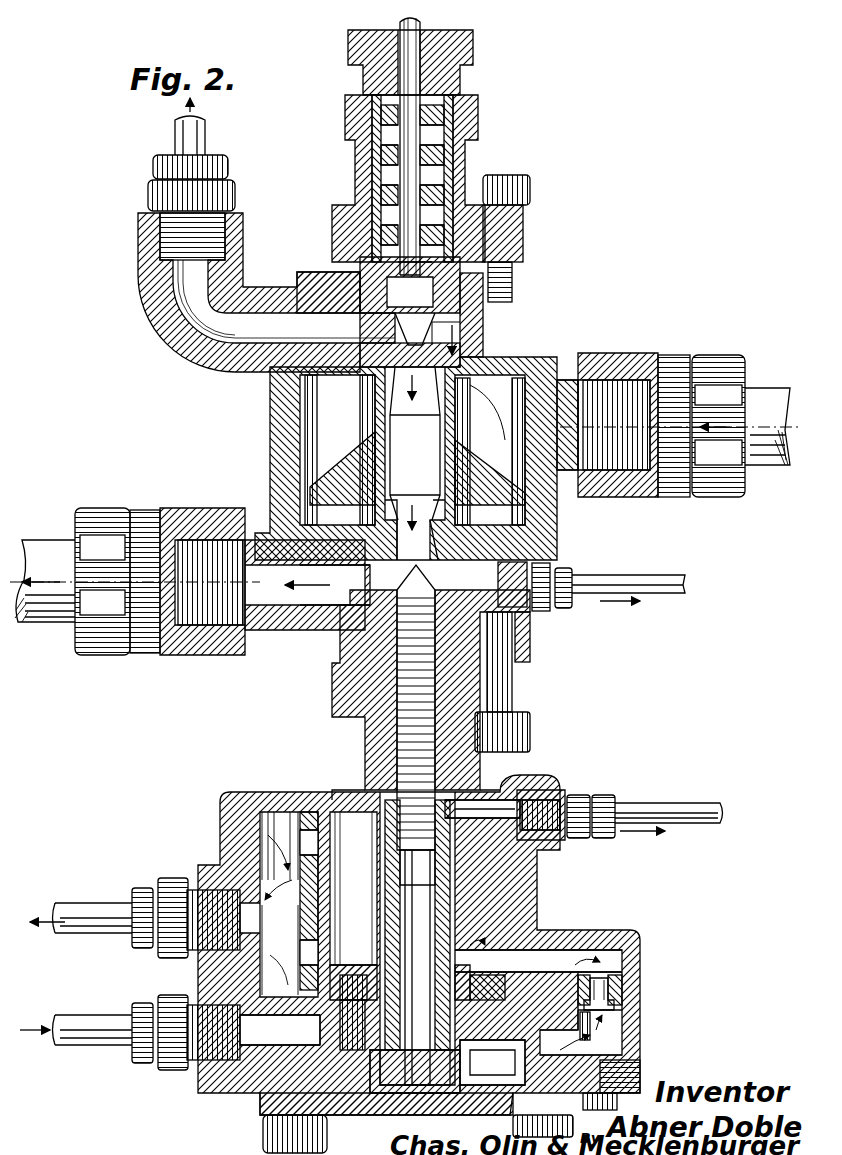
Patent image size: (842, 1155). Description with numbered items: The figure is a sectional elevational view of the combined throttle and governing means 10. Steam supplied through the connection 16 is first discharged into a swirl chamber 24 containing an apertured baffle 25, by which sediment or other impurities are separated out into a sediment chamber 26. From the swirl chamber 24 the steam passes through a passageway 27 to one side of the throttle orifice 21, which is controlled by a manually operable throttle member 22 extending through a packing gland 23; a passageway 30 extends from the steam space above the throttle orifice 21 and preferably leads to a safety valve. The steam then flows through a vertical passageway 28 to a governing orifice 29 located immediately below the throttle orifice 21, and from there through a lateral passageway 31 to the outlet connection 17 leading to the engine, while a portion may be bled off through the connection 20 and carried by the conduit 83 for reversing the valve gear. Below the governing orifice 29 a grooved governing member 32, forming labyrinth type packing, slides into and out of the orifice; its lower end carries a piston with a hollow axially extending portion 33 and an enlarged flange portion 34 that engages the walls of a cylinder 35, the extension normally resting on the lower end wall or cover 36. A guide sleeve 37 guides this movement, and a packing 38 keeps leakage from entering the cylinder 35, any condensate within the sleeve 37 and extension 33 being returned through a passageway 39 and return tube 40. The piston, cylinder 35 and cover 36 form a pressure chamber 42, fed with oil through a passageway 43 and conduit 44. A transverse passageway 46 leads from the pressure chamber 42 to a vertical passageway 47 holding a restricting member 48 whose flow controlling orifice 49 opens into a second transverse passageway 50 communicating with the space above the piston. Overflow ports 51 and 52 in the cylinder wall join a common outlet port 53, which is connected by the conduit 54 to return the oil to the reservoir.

The combined throttle and governing means 10 is at (529, 356).
The connection 16 is at (757, 393).
The outlet connection 17 is at (62, 618).
The connection 20 is at (562, 606).
The throttle orifice 21 is at (432, 333).
The throttle member 22 is at (446, 167).
The packing gland 23 is at (470, 142).
The swirl chamber 24 is at (316, 405).
The apertured baffle 25 is at (340, 460).
The sediment chamber 26 is at (540, 514).
The passageway 27 is at (456, 380).
The vertical passageway 28 is at (408, 442).
The governing orifice 29 is at (394, 508).
The passageway 30 is at (196, 321).
The lateral passageway 31 is at (300, 600).
The governing member 32 is at (405, 736).
The axially extending portion 33 is at (468, 1062).
The enlarged flange portion 34 is at (508, 968).
The cylinder 35 is at (538, 893).
The lower end wall or cover 36 is at (435, 1112).
The guide sleeve 37 is at (452, 887).
The packing 38 is at (374, 975).
The passageway 39 is at (487, 806).
The return tube 40 is at (645, 807).
The pressure chamber 42 is at (362, 1082).
The passageway 43 is at (262, 1020).
The conduit 44 is at (108, 1043).
The transverse passageway 46 is at (612, 1042).
The vertical passageway 47 is at (614, 1012).
The restricting member 48 is at (612, 982).
The flow controlling orifice 49 is at (606, 967).
The second transverse passageway 50 is at (556, 956).
The outlet or overflow port 51 is at (312, 983).
The outlet or overflow port 52 is at (306, 814).
The common outlet port 53 is at (270, 908).
The conduit 54 is at (110, 924).
The conduit 83 is at (595, 580).